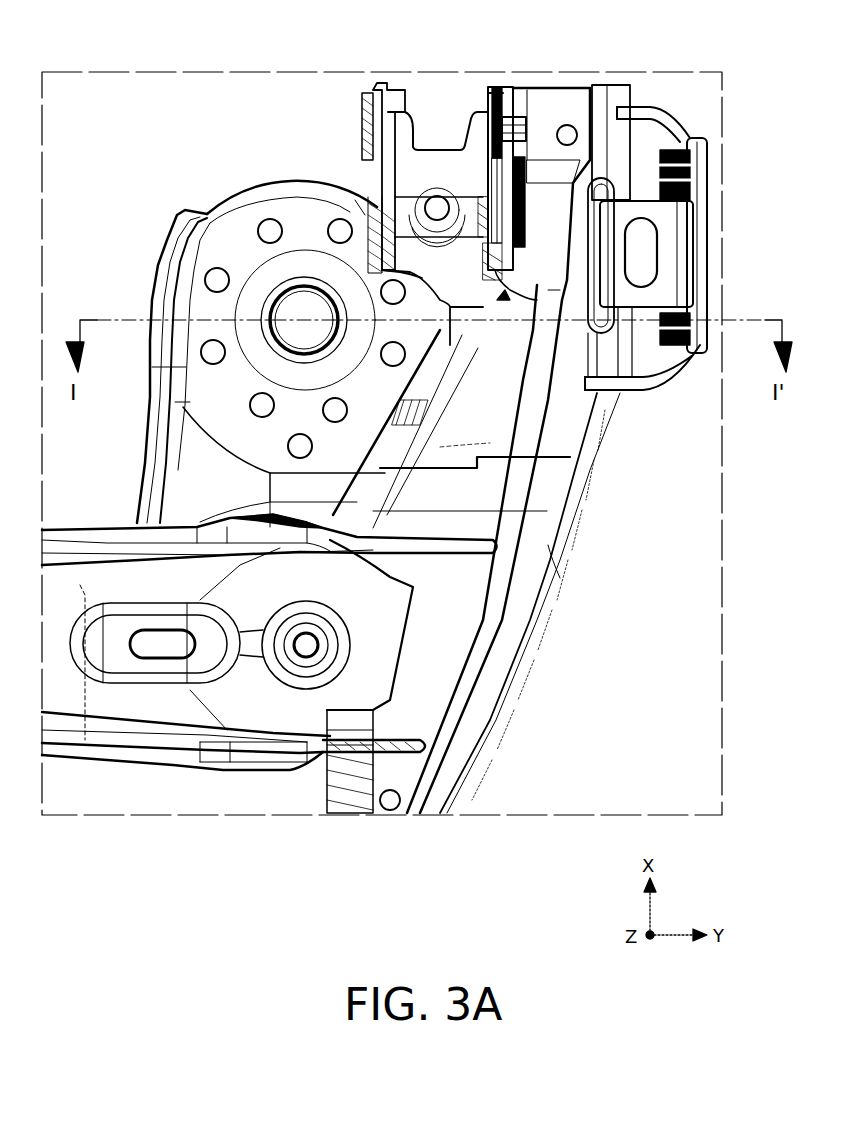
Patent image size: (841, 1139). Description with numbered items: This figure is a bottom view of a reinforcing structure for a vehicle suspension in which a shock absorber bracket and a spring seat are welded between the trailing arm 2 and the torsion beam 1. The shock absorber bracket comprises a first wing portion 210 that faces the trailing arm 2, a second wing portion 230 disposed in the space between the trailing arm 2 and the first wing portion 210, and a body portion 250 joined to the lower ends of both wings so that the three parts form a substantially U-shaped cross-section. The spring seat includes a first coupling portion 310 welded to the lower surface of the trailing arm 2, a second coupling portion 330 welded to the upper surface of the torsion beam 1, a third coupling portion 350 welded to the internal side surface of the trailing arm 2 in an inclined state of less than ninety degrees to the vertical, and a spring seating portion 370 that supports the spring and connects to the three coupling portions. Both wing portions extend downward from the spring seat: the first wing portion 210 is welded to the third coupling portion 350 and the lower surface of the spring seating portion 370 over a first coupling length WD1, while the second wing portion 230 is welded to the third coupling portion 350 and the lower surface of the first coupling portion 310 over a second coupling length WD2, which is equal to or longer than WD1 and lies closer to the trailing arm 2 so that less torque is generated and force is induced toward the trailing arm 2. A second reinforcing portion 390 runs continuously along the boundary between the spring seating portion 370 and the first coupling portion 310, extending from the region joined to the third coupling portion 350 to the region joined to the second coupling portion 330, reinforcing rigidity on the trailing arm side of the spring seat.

The torsion beam 1 is at (88, 590).
The trailing arm 2 is at (517, 433).
The first wing portion 210 is at (407, 92).
The second wing portion 230 is at (490, 92).
The body portion 250 is at (433, 140).
The first coupling portion 310 is at (490, 380).
The second coupling portion 330 is at (197, 470).
The third coupling portion 350 is at (585, 197).
The spring seating portion 370 is at (210, 245).
The second reinforcing portion 390 is at (490, 413).
The first coupling portion length WD1 is at (358, 178).
The second coupling portion length WD2 is at (558, 292).